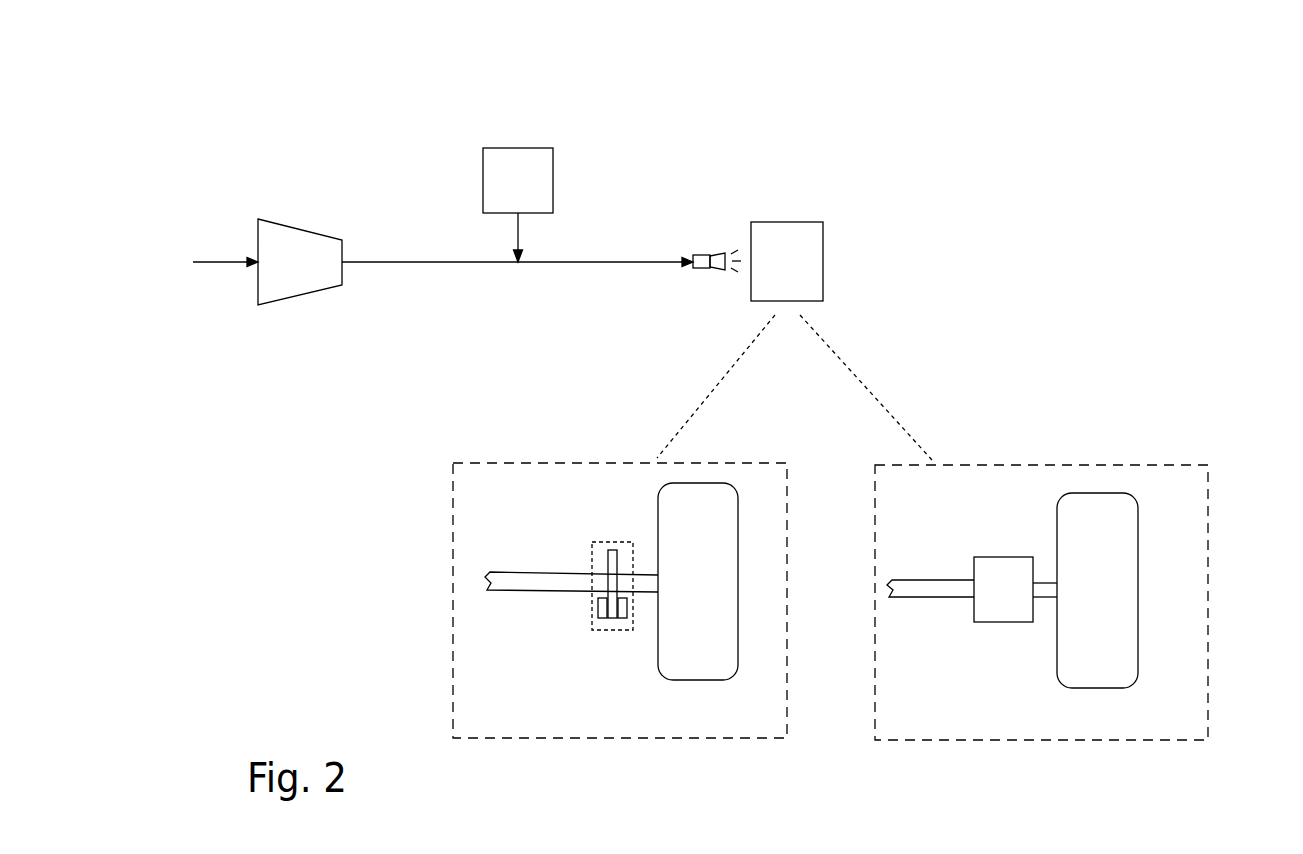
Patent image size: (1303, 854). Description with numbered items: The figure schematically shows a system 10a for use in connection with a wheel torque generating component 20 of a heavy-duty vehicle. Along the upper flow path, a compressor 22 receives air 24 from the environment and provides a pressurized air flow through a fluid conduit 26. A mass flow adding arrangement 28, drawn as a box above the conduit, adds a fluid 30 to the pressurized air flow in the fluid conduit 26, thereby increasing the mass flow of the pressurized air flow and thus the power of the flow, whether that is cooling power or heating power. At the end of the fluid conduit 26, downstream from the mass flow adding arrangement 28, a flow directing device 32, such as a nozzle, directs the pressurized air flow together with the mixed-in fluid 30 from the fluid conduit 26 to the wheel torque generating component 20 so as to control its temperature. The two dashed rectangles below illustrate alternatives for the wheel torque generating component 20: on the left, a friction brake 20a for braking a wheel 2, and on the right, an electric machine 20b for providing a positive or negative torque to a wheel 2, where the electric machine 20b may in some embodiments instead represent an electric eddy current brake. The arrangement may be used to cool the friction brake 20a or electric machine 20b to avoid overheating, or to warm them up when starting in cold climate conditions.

The system 10a is at (921, 117).
The wheel torque generating component 20 is at (823, 242).
The friction brake 20a is at (610, 632).
The electric machine 20b is at (1010, 622).
The compressor 22 is at (296, 222).
The air 24 is at (225, 262).
The fluid conduit 26 is at (393, 262).
The mass flow adding arrangement 28 is at (492, 148).
The fluid 30 is at (518, 230).
The flow directing device 32 is at (700, 250).
The wheel 2 is at (688, 680).